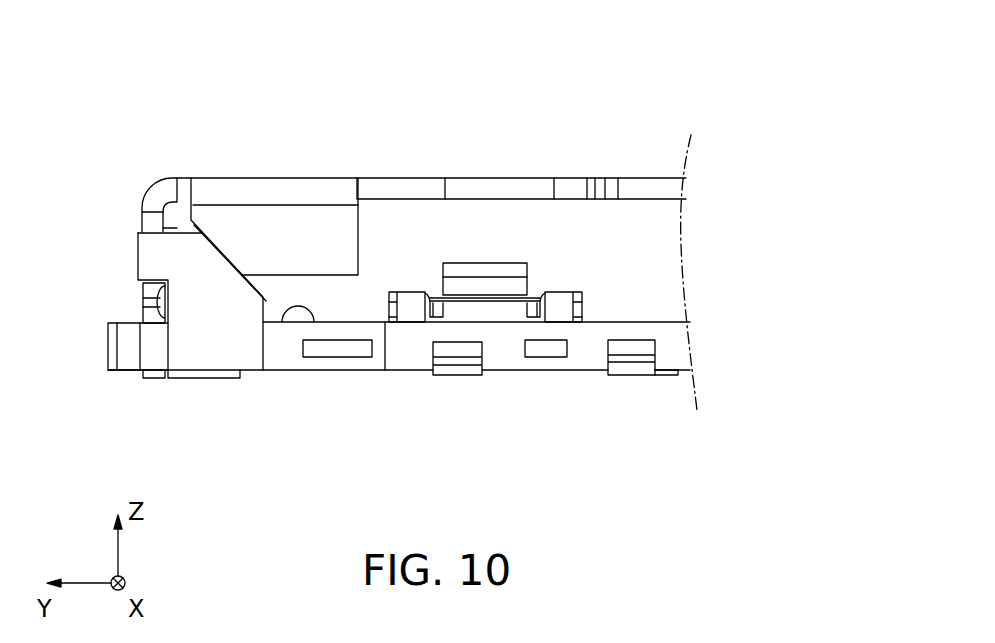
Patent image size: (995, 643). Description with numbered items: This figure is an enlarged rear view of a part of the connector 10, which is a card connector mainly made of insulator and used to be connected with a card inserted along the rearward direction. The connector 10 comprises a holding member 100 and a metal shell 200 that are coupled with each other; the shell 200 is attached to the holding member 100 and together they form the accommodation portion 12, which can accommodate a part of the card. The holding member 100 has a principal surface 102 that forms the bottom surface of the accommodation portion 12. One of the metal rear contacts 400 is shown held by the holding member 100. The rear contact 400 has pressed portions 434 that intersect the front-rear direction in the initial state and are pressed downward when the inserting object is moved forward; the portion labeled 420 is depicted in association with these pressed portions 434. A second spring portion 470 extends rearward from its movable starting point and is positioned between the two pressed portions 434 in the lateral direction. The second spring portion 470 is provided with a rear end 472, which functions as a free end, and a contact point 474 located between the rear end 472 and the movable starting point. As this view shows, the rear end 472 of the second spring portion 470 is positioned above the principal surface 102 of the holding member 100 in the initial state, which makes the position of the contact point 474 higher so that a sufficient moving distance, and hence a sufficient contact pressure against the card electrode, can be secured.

The connector 10 is at (643, 165).
The accommodation portion 12 is at (647, 247).
The holding member 100 is at (680, 351).
The principal surface 102 is at (313, 325).
The shell 200 is at (279, 192).
The rear contact 400 is at (487, 267).
The clip portion 420 is at (487, 389).
The pressed portion 434 is at (410, 305).
The second spring portion 470 is at (477, 171).
The rear end 472 is at (487, 302).
The contact point 474 is at (487, 262).